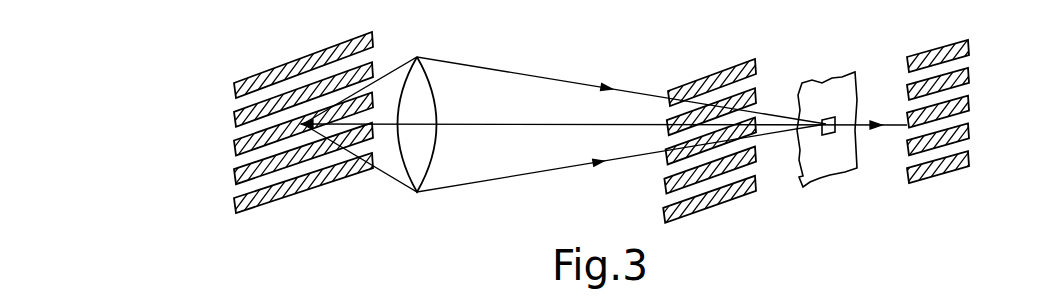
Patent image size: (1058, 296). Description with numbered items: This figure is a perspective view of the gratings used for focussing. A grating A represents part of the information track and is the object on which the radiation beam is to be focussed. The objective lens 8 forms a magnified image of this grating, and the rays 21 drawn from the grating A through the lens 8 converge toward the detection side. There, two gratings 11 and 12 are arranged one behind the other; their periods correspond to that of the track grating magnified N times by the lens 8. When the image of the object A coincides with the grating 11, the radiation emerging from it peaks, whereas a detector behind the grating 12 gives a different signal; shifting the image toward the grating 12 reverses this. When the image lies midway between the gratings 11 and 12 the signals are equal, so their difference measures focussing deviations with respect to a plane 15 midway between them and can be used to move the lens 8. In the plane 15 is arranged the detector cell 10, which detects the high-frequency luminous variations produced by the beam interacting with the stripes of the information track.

The grating A is at (304, 132).
The light rays 21 is at (383, 74).
The objective lens 8 is at (420, 168).
The grating 11 is at (734, 195).
The plane 15 is at (800, 178).
The detector cell 10 is at (830, 138).
The grating 12 is at (940, 173).